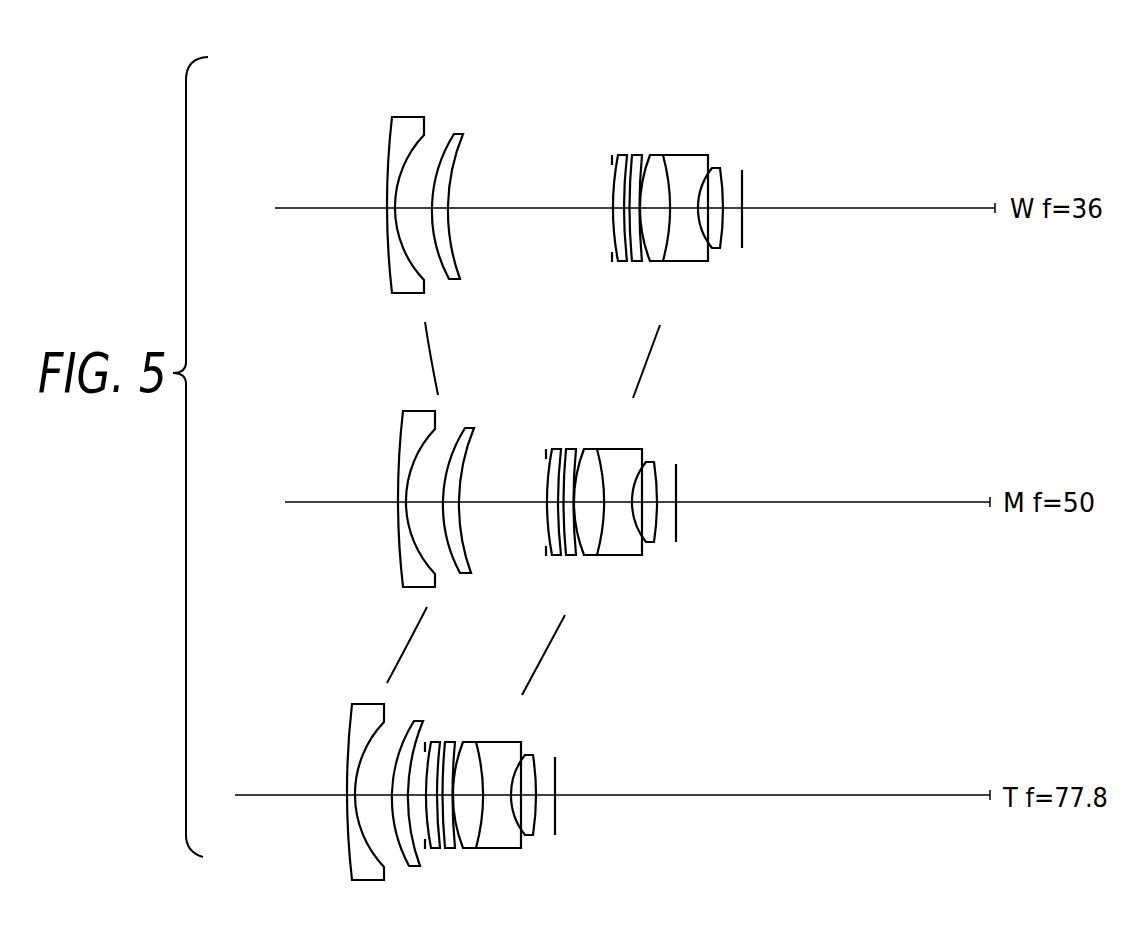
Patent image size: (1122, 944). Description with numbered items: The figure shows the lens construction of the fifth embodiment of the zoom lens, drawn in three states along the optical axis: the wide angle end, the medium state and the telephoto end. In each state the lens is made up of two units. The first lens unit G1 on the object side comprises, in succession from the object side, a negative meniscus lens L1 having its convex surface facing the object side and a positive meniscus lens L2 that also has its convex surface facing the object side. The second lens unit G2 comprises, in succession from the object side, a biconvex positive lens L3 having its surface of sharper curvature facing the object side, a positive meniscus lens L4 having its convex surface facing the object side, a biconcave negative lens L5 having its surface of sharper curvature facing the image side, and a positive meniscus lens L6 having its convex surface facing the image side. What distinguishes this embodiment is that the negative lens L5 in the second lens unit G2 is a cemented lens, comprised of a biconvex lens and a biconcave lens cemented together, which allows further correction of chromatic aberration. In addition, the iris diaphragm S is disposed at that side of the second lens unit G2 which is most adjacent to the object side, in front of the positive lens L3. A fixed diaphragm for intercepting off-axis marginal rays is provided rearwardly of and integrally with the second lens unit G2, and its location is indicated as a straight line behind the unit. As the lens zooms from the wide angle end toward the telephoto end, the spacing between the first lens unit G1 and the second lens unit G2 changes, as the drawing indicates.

The first lens unit G1 is at (492, 68).
The second lens unit G2 is at (757, 94).
The negative meniscus lens L1 is at (407, 116).
The positive meniscus lens L2 is at (460, 133).
The biconvex positive lens L3 is at (618, 153).
The positive meniscus lens L4 is at (633, 153).
The biconcave negative lens L5 is at (712, 141).
The positive meniscus lens L6 is at (715, 165).
The iris diaphragm S is at (610, 263).